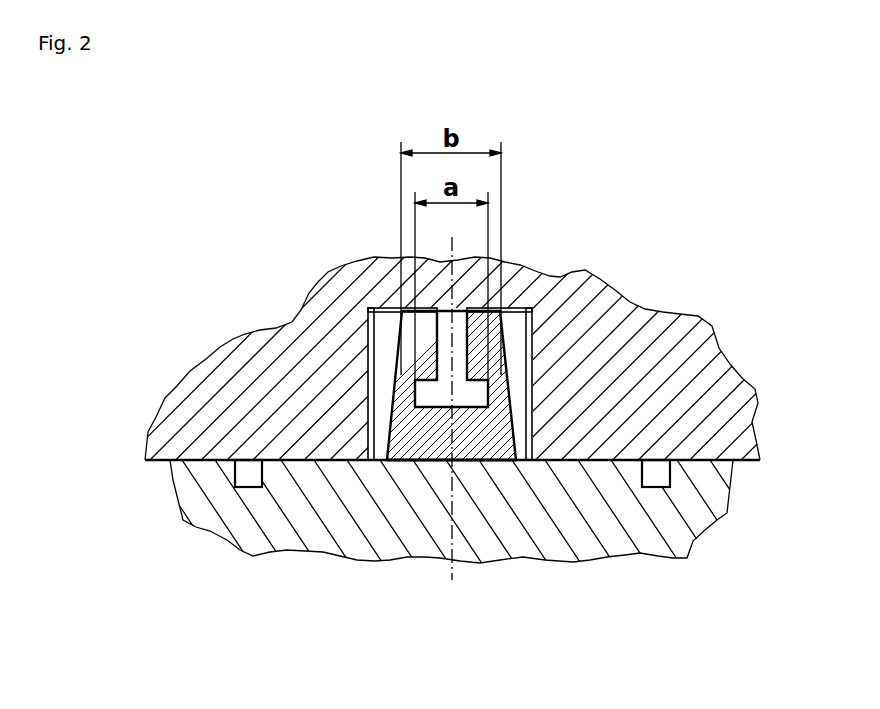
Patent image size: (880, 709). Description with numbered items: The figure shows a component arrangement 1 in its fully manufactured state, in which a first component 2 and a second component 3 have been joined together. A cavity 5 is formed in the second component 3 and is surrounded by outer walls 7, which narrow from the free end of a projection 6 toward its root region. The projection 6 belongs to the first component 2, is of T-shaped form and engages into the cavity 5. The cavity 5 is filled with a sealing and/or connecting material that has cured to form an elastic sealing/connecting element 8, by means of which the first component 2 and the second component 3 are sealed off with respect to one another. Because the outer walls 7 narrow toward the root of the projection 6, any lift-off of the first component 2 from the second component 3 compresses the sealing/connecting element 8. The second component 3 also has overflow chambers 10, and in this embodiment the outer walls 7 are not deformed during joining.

The component arrangement 1 is at (725, 262).
The first component 2 is at (648, 355).
The second component 3 is at (582, 527).
The cavity 5 is at (507, 378).
The projection 6 is at (460, 388).
The outer wall 7 is at (385, 333).
The sealing/connecting element 8 is at (420, 437).
The overflow chamber 10 is at (243, 489).